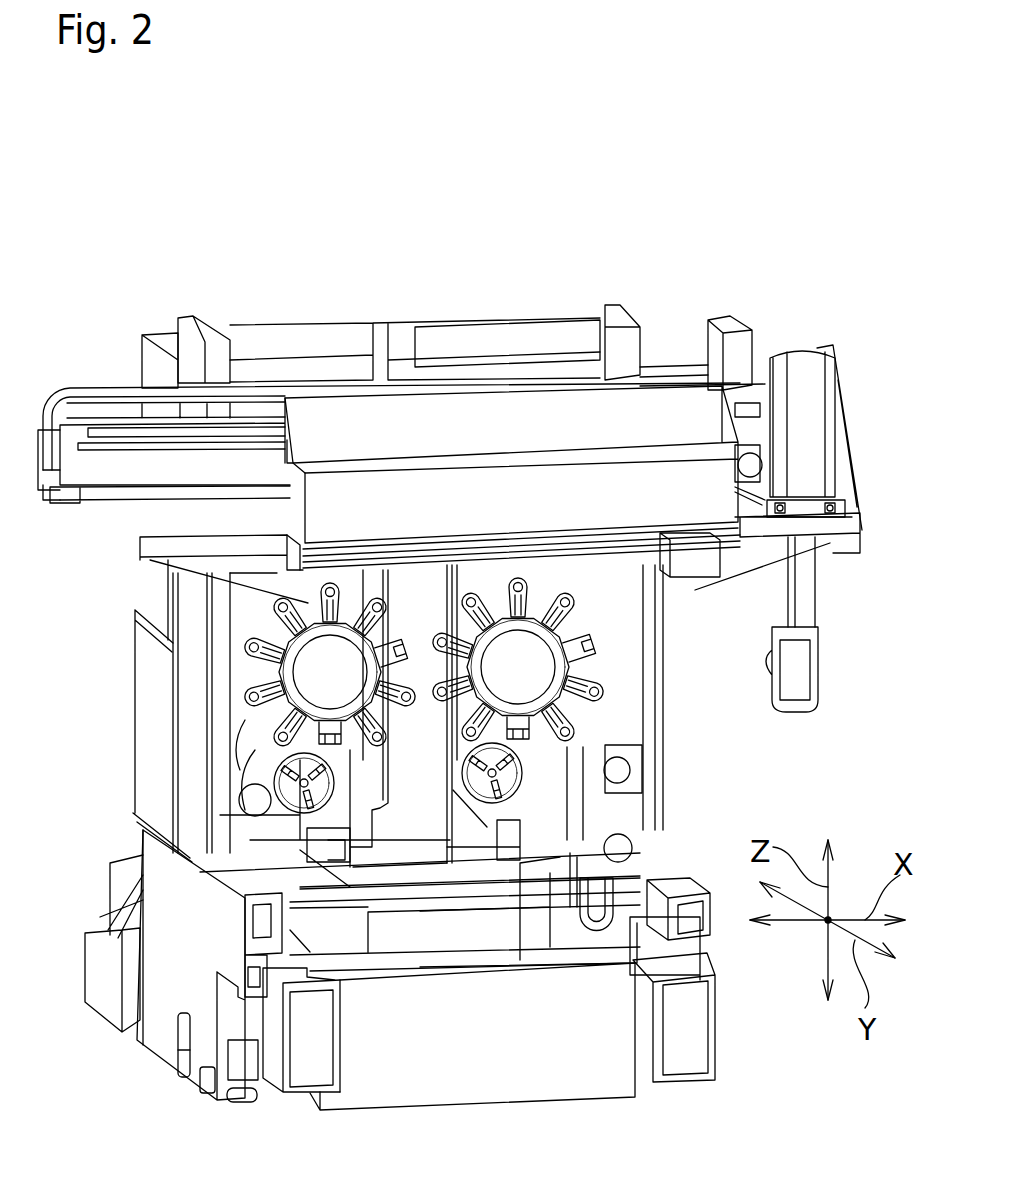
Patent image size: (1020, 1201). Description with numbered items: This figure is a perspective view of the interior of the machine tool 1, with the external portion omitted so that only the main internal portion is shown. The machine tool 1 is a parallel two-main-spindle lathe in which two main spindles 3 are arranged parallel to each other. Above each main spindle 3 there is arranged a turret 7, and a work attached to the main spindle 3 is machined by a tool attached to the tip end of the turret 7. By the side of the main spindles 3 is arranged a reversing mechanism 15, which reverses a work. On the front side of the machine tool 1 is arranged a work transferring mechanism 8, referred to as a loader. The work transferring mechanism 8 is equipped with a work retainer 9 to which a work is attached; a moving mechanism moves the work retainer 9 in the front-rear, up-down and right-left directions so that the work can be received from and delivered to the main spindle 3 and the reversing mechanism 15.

The machine tool 1 is at (449, 707).
The main spindle 3 is at (297, 782).
The turret 7 is at (313, 670).
The work transferring mechanism 8 is at (845, 710).
The work retainer 9 is at (777, 697).
The reversing mechanism 15 is at (583, 883).